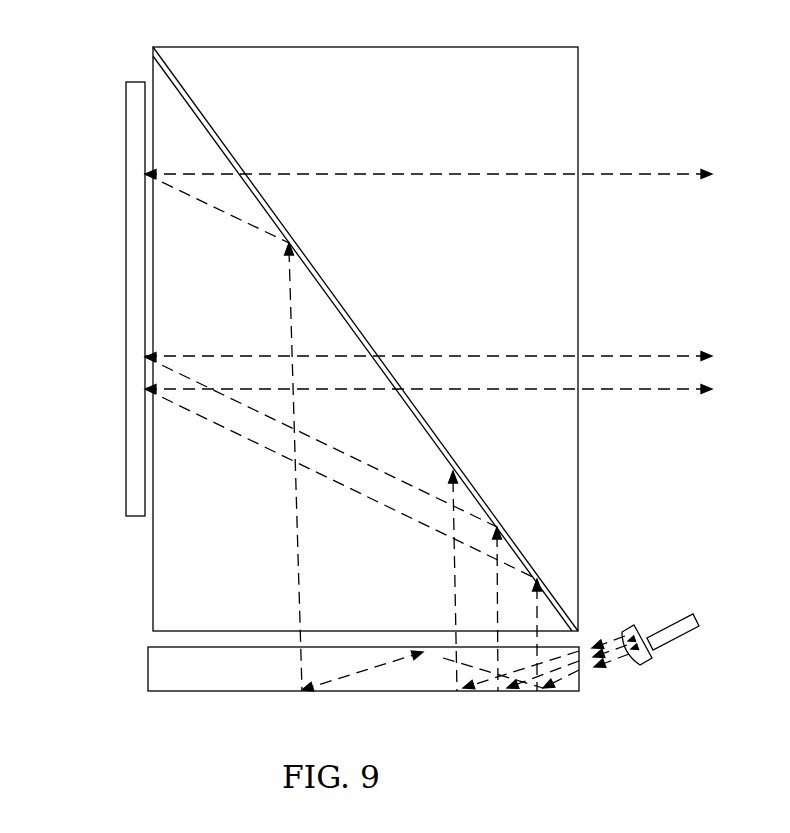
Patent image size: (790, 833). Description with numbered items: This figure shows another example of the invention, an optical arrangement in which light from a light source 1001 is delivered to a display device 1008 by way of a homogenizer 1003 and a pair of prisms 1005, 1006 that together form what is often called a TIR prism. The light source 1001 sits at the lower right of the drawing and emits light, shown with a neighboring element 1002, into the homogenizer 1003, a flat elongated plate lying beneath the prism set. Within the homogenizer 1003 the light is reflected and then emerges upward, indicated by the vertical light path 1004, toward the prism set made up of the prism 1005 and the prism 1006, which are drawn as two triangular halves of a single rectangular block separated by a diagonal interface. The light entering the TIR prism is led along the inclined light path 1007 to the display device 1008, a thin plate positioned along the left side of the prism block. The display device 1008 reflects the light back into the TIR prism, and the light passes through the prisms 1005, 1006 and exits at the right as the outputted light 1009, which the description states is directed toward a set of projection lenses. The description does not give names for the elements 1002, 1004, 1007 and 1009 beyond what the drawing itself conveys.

The light source 1001 is at (683, 612).
The lens 1002 is at (648, 663).
The homogenizer 1003 is at (383, 680).
The light beam 1004 is at (458, 613).
The prism 1005 is at (192, 590).
The prism 1006 is at (463, 75).
The reflected light beam 1007 is at (242, 437).
The display device 1008 is at (126, 316).
The emitted light beam 1009 is at (622, 355).